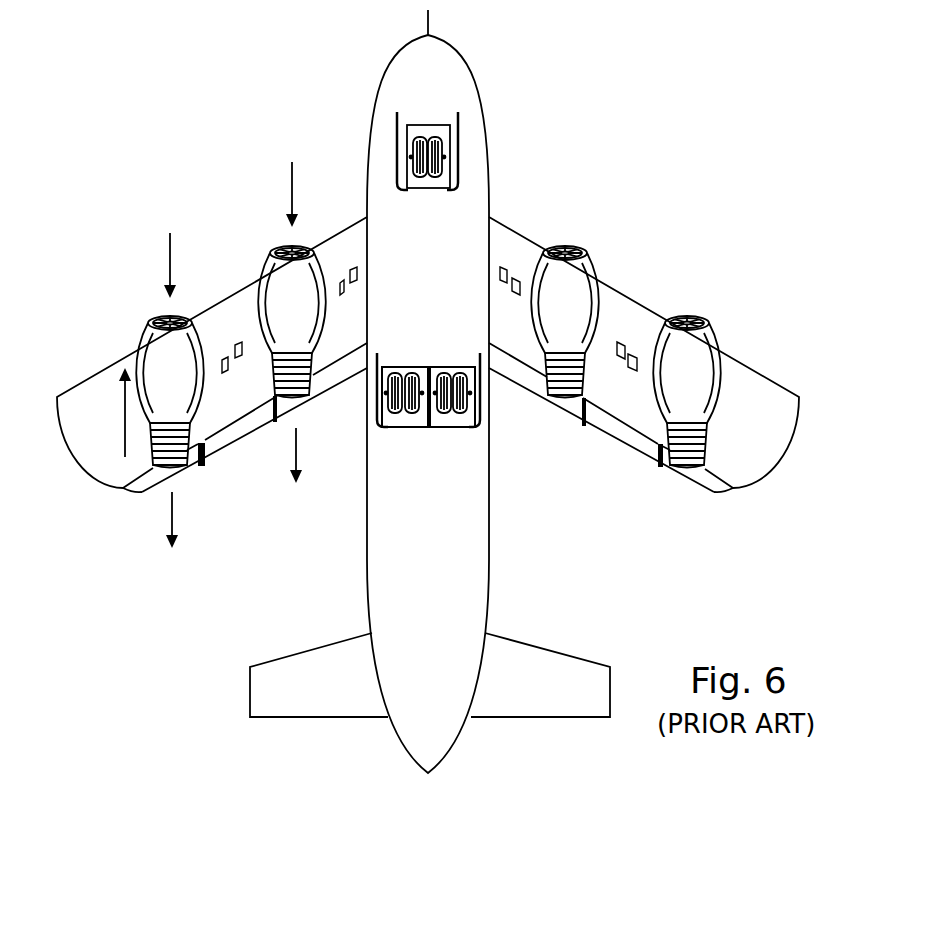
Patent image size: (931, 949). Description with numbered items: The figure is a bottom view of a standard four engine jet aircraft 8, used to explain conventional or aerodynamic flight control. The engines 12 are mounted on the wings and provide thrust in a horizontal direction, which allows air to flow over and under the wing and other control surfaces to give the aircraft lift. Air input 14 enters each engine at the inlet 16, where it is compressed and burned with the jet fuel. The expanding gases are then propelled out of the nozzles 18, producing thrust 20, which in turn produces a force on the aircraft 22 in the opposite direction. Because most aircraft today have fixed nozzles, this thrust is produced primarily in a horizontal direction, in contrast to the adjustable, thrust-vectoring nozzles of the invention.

The four engine jet aircraft 8 is at (498, 123).
The engines 12 is at (261, 286).
The air input 14 is at (292, 200).
The engine inlet 16 is at (273, 250).
The nozzles 18 is at (290, 398).
The thrust 20 is at (168, 513).
The force on the aircraft 22 is at (123, 424).